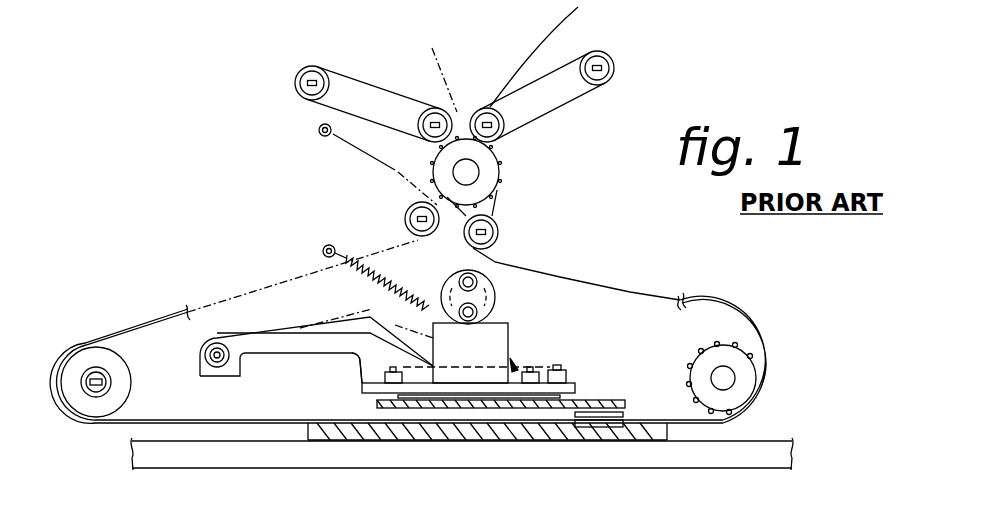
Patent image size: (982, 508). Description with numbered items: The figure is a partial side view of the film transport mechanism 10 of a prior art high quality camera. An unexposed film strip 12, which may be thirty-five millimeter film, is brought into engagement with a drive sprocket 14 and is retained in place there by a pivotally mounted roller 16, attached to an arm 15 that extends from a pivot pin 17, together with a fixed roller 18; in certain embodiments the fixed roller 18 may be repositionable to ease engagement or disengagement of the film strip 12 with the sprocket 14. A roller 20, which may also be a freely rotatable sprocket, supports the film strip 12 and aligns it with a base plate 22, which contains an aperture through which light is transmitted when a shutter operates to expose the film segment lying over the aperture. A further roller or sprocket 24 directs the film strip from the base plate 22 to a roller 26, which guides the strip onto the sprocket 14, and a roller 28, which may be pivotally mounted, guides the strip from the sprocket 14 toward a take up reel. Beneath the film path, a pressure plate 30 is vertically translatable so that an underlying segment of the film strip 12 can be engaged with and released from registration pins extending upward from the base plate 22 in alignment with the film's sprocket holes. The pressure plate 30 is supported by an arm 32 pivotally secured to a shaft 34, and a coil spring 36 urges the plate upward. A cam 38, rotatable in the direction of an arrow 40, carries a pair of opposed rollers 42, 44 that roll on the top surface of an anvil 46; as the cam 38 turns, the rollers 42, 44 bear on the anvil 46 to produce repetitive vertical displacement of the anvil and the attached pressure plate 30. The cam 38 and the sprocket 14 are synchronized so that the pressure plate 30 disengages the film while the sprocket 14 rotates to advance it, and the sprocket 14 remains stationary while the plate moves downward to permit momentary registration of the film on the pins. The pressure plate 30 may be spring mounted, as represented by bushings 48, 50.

The film transport mechanism 10 is at (462, 473).
The film strip 12 is at (432, 48).
The drive sprocket 14 is at (497, 170).
The arm 15 is at (350, 70).
The pivotally mounted roller 16 is at (453, 107).
The pivot pin 17 is at (298, 67).
The fixed roller 18 is at (405, 215).
The roller 20 is at (118, 387).
The base plate 22 is at (433, 433).
The roller or sprocket 24 is at (747, 380).
The roller 26 is at (497, 232).
The roller 28 is at (477, 110).
The pressure plate 30 is at (613, 400).
The arm 32 is at (272, 355).
The shaft 34 is at (217, 363).
The coil spring 36 is at (356, 262).
The cam 38 is at (495, 298).
The arrow 40 is at (504, 283).
The roller 42 is at (459, 276).
The roller 44 is at (433, 317).
The anvil 46 is at (493, 343).
The bushing 48 is at (562, 368).
The bushing 50 is at (360, 375).